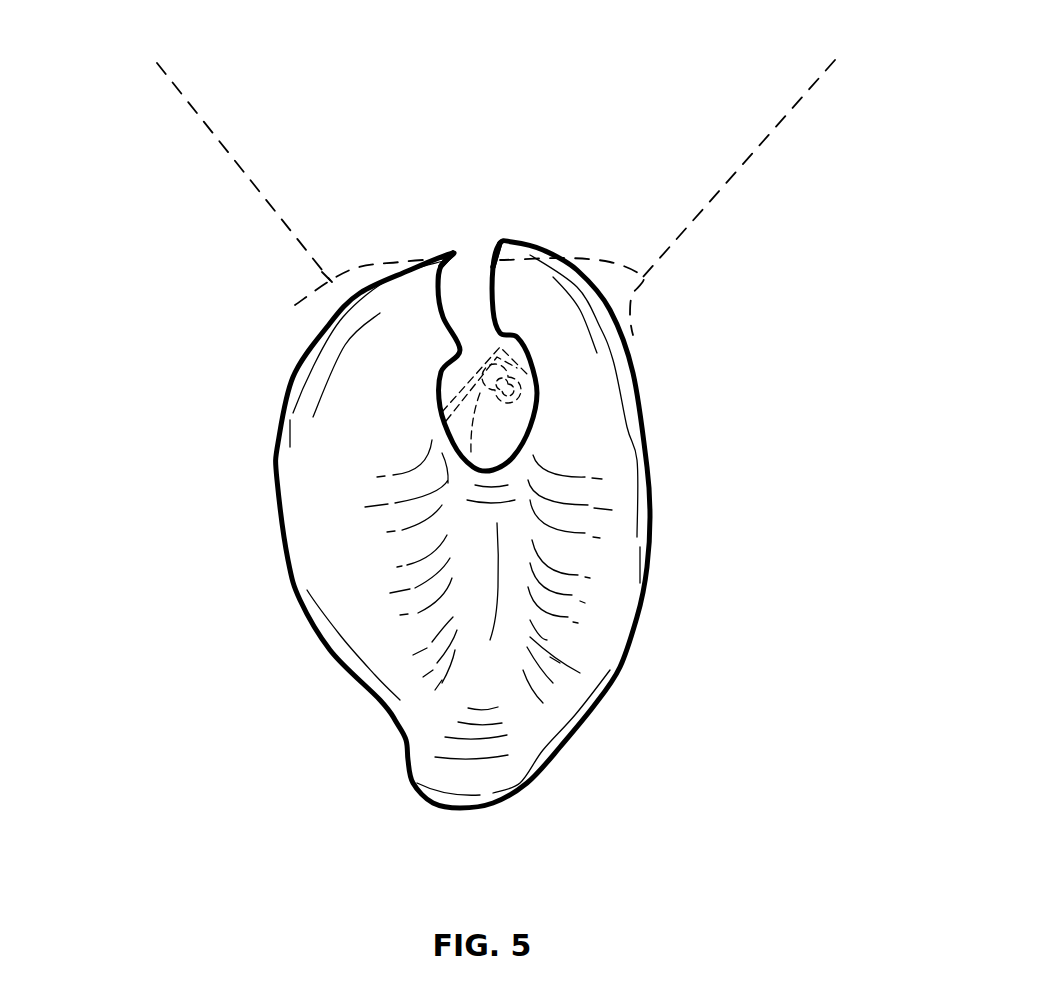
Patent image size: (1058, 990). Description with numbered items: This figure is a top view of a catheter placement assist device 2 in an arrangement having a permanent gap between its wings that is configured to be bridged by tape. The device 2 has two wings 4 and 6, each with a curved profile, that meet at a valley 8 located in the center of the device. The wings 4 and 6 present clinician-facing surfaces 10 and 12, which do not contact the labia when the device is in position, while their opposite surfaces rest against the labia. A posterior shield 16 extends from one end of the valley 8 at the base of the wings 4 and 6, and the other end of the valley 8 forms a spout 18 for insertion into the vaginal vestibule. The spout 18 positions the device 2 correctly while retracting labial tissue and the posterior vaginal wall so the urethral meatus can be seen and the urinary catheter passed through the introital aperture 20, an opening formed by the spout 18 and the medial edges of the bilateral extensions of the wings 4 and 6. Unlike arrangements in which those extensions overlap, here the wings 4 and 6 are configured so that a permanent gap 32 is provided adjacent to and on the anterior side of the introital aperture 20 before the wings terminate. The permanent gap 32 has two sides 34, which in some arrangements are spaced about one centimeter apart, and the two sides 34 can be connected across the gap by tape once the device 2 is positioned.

The catheter placement assist device 2 is at (210, 293).
The wing 4 is at (290, 578).
The wing 6 is at (612, 668).
The valley 8 is at (490, 593).
The clinician-facing surface 10 is at (307, 495).
The clinician-facing surface 12 is at (623, 587).
The posterior shield 16 is at (442, 808).
The spout 18 is at (502, 462).
The introital aperture 20 is at (537, 390).
The permanent gap 32 is at (474, 240).
The sides 34 is at (433, 270).